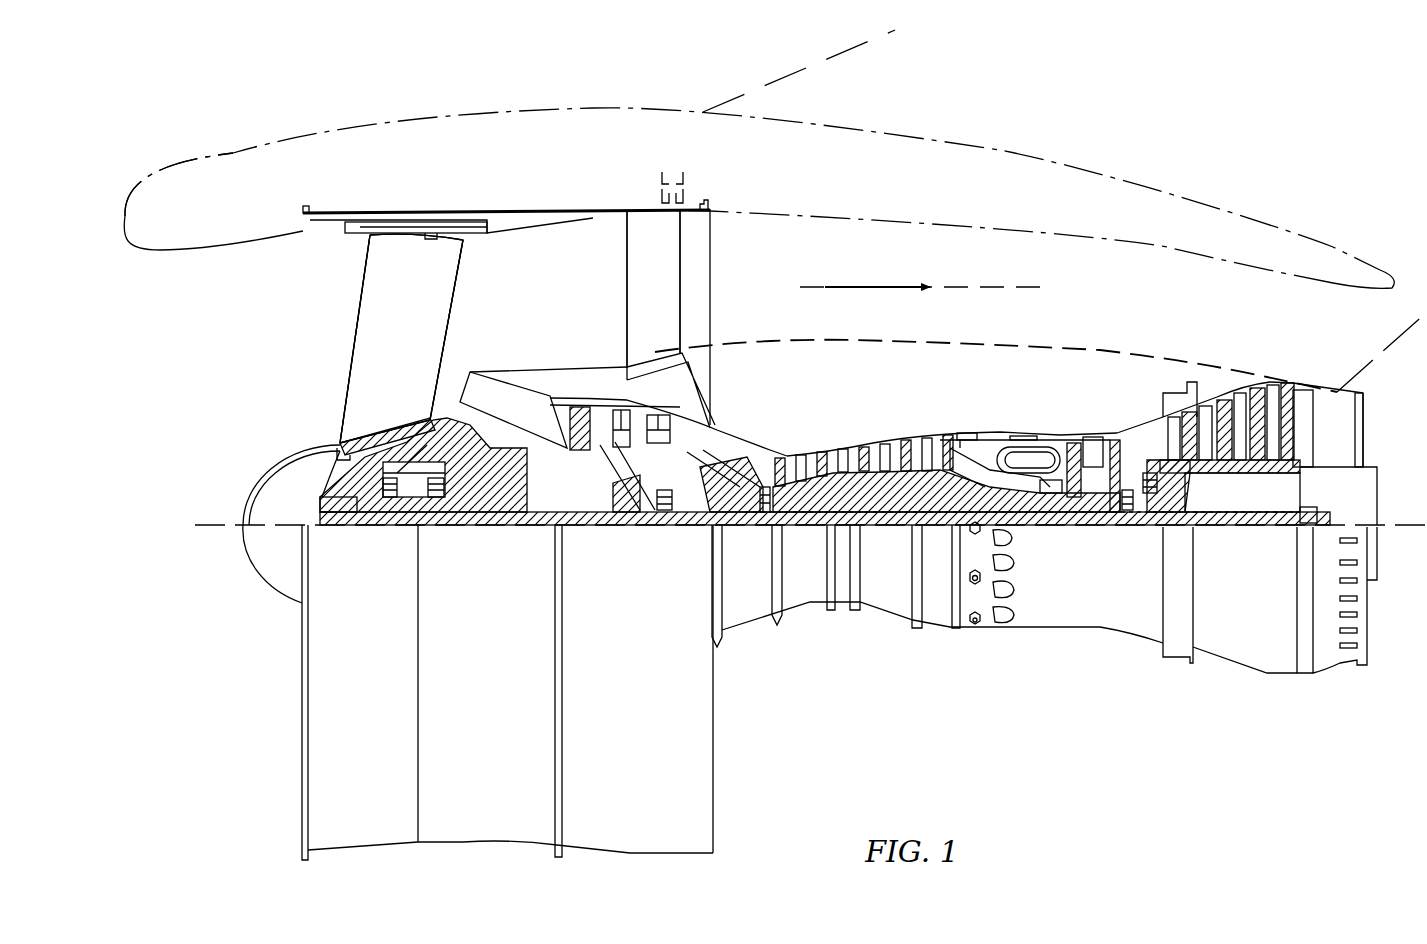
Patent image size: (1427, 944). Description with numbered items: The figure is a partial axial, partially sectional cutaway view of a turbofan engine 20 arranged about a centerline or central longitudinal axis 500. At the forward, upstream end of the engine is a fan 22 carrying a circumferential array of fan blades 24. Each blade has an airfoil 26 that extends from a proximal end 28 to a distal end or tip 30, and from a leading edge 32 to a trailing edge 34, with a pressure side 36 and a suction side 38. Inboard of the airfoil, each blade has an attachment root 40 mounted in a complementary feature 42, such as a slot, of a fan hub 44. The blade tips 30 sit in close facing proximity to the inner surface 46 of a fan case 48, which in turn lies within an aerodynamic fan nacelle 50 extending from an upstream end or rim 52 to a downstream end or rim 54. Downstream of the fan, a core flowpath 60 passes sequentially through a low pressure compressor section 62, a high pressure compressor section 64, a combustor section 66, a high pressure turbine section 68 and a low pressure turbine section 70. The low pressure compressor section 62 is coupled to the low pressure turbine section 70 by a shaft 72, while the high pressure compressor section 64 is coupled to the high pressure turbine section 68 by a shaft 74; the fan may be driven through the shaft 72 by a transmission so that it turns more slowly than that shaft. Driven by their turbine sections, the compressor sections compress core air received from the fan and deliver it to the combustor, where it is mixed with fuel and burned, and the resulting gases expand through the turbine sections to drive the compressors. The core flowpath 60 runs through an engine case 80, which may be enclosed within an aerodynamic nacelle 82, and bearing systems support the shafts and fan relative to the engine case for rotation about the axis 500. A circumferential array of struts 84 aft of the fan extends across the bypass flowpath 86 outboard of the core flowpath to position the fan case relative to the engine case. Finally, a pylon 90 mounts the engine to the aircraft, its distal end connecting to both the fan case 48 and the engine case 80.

The turbofan engine 20 is at (876, 755).
The fan 22 is at (262, 450).
The fan blades 24 is at (375, 373).
The airfoil 26 is at (395, 327).
The proximal end 28 is at (422, 430).
The tip 30 is at (440, 236).
The leading edge 32 is at (370, 293).
The trailing edge 34 is at (462, 278).
The pressure side 36 is at (430, 313).
The suction side 38 is at (407, 266).
The attachment root 40 is at (387, 430).
The complementary feature 42 is at (348, 425).
The fan hub 44 is at (362, 505).
The inner surface 46 is at (498, 234).
The fan case 48 is at (398, 210).
The fan nacelle 50 is at (766, 162).
The upstream end 52 is at (108, 242).
The downstream end 54 is at (1396, 275).
The core flowpath 60 is at (560, 425).
The low pressure compressor section 62 is at (645, 530).
The high pressure compressor section 64 is at (872, 440).
The combustor section 66 is at (1027, 425).
The high pressure turbine section 68 is at (1241, 413).
The low pressure turbine section 70 is at (1282, 378).
The shaft 72 is at (737, 528).
The shaft 74 is at (1005, 530).
The engine case 80 is at (915, 640).
The nacelle 82 is at (1002, 330).
The struts 84 is at (662, 250).
The bypass flowpath 86 is at (968, 287).
The pylon 90 is at (790, 57).
The central longitudinal axis 500 is at (1412, 535).